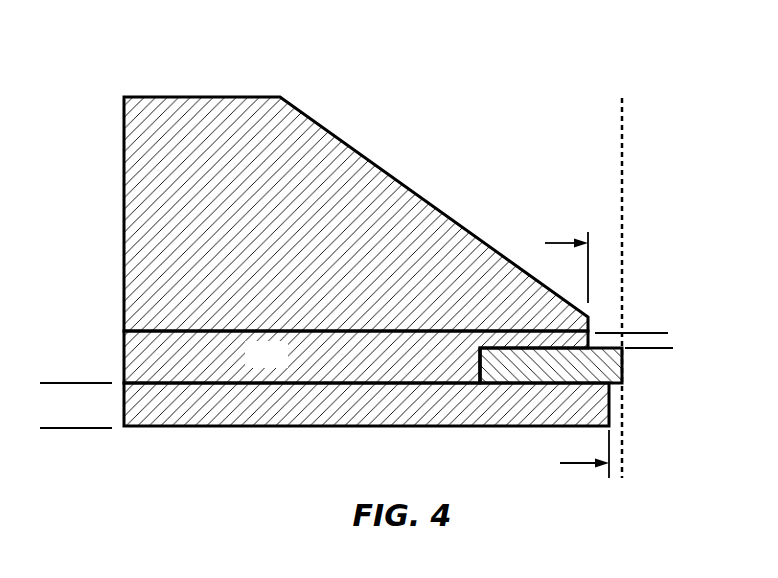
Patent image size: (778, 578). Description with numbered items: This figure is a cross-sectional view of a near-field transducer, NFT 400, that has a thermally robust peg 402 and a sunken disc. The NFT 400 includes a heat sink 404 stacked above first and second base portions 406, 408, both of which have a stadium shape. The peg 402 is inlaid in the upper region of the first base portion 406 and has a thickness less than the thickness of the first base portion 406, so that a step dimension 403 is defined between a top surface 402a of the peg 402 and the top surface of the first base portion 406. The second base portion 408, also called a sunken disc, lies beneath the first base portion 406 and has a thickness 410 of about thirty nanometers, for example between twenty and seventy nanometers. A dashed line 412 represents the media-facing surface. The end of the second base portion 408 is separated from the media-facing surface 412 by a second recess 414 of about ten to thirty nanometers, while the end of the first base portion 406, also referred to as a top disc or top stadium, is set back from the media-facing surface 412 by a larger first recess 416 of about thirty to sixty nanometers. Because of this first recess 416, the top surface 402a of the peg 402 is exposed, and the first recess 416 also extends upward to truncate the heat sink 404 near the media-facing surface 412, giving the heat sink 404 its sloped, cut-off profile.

The near-field transducer 400 is at (413, 269).
The peg 402 is at (622, 383).
The top surface of the peg 402a is at (493, 352).
The step dimension 403 is at (659, 385).
The heat sink 404 is at (337, 138).
The first base portion 406 is at (284, 365).
The second base portion 408 is at (293, 417).
The thickness 410 is at (52, 473).
The media-facing surface 412 is at (625, 106).
The second recess 414 is at (634, 463).
The first recess 416 is at (634, 243).